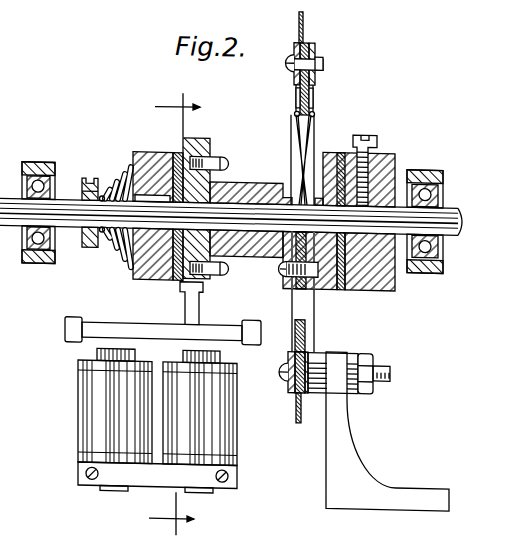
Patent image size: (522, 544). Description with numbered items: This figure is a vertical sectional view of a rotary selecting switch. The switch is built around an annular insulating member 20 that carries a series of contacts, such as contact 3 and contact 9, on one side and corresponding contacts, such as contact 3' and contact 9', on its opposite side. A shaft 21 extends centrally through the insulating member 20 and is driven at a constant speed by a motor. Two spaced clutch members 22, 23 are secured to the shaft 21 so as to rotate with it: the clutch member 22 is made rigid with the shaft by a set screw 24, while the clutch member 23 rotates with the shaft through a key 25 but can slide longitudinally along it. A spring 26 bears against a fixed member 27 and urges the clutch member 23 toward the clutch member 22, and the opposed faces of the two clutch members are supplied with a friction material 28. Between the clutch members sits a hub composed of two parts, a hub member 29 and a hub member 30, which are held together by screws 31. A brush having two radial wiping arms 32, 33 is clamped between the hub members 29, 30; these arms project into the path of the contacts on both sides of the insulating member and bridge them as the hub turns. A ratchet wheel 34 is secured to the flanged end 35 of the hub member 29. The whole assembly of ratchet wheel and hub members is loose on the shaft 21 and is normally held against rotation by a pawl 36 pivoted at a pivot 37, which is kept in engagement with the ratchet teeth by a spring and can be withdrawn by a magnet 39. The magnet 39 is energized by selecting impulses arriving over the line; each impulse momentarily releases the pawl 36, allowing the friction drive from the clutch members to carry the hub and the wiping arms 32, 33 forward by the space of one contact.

The contact 3 is at (226, 276).
The contact 3' is at (317, 101).
The contact 9 is at (292, 375).
The contact 9' is at (303, 356).
The annular insulating member 20 is at (314, 47).
The shaft 21 is at (463, 218).
The clutch member 22 is at (394, 159).
The clutch member 23 is at (137, 155).
The set screw 24 is at (369, 134).
The key 25 is at (150, 201).
The spring 26 is at (118, 256).
The fixed member 27 is at (95, 252).
The friction material 28 is at (178, 154).
The hub member 29 is at (248, 183).
The hub member 30 is at (329, 288).
The screw 31 is at (279, 277).
The wiping arm 32 is at (292, 132).
The wiping arm 33 is at (314, 132).
The ratchet wheel 34 is at (200, 143).
The flanged end 35 is at (217, 157).
The pawl 36 is at (185, 322).
The pivot 37 is at (123, 333).
The magnet 39 is at (80, 426).